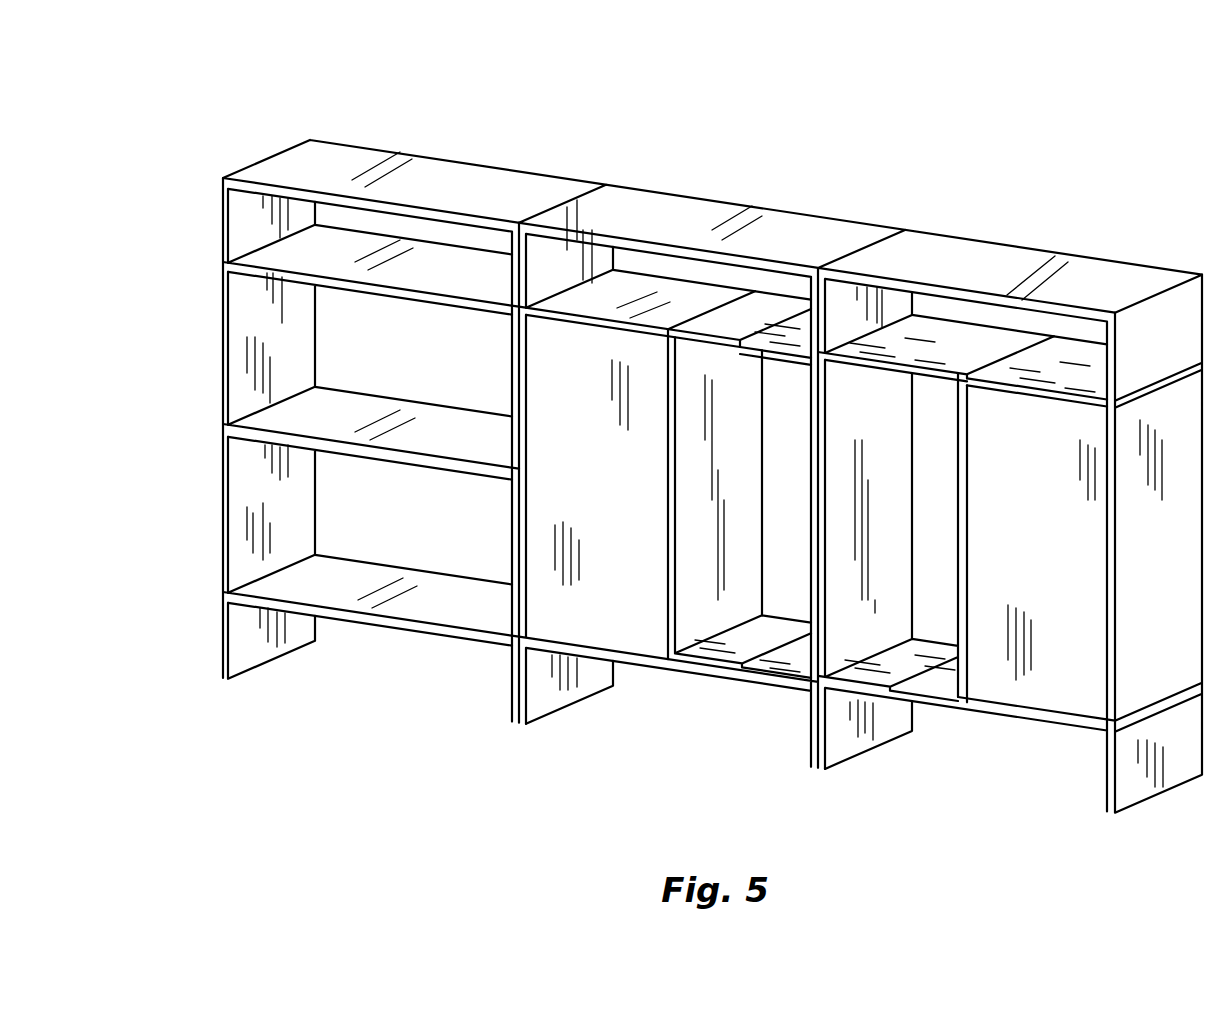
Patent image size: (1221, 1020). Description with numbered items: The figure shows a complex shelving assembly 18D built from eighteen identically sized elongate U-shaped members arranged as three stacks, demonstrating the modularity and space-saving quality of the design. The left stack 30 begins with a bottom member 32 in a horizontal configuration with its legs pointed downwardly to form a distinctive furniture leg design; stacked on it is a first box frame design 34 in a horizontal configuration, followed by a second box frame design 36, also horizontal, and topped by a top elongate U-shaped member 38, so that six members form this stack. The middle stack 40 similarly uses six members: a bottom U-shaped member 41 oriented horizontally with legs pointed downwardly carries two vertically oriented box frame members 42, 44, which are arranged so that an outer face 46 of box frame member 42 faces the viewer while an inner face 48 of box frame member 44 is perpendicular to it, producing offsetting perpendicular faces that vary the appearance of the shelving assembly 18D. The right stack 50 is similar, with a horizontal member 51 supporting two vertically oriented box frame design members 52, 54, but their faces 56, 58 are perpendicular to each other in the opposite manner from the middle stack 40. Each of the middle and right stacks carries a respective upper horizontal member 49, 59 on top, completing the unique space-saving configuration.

The shelving assembly 18D is at (204, 84).
The left stack 30 is at (313, 453).
The bottom member 32 is at (222, 641).
The first box frame design 34 is at (222, 555).
The second box frame design 36 is at (222, 385).
The top elongate U-shaped member 38 is at (222, 218).
The middle stack 40 is at (668, 465).
The bottom U-shaped member 41 is at (541, 695).
The box frame member 42 is at (638, 310).
The box frame member 44 is at (771, 343).
The outer face 46 is at (582, 490).
The inner face 48 is at (713, 405).
The upper horizontal member 49 is at (678, 208).
The right stack 50 is at (1010, 508).
The horizontal member 51 is at (838, 737).
The box frame design member 52 is at (939, 361).
The box frame design member 54 is at (1064, 379).
The face 56 is at (874, 423).
The face 58 is at (998, 523).
The upper horizontal member 59 is at (963, 250).